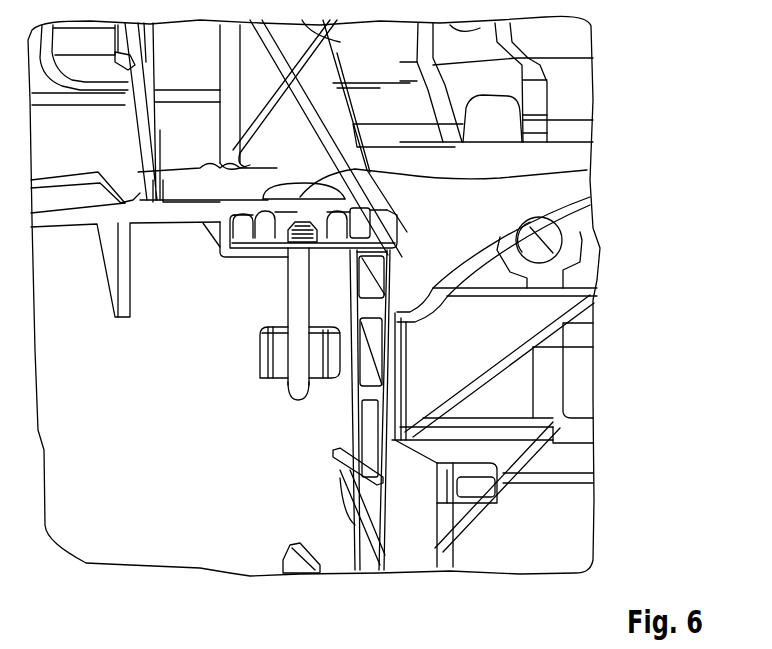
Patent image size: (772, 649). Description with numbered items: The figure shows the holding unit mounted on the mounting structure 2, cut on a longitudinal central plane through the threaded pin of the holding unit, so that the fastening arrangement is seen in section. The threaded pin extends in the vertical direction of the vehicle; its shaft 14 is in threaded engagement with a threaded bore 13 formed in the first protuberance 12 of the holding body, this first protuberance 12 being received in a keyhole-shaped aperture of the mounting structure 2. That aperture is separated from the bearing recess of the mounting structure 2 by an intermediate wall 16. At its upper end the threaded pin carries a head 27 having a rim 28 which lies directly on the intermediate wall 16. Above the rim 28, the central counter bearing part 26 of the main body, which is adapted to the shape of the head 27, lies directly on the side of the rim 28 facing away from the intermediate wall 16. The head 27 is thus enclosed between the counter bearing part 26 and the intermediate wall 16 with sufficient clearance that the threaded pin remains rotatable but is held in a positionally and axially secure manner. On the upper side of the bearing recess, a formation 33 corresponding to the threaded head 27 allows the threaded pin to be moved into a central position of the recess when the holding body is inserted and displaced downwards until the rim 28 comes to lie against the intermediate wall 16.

The mounting structure 2 is at (573, 96).
The formation 33 is at (577, 173).
The counter bearing part 26 is at (345, 199).
The head 27 is at (397, 236).
The rim 28 is at (283, 252).
The shaft 14 is at (288, 302).
The threaded bore 13 is at (283, 350).
The first protuberance 12 is at (260, 368).
The intermediate wall 16 is at (253, 256).